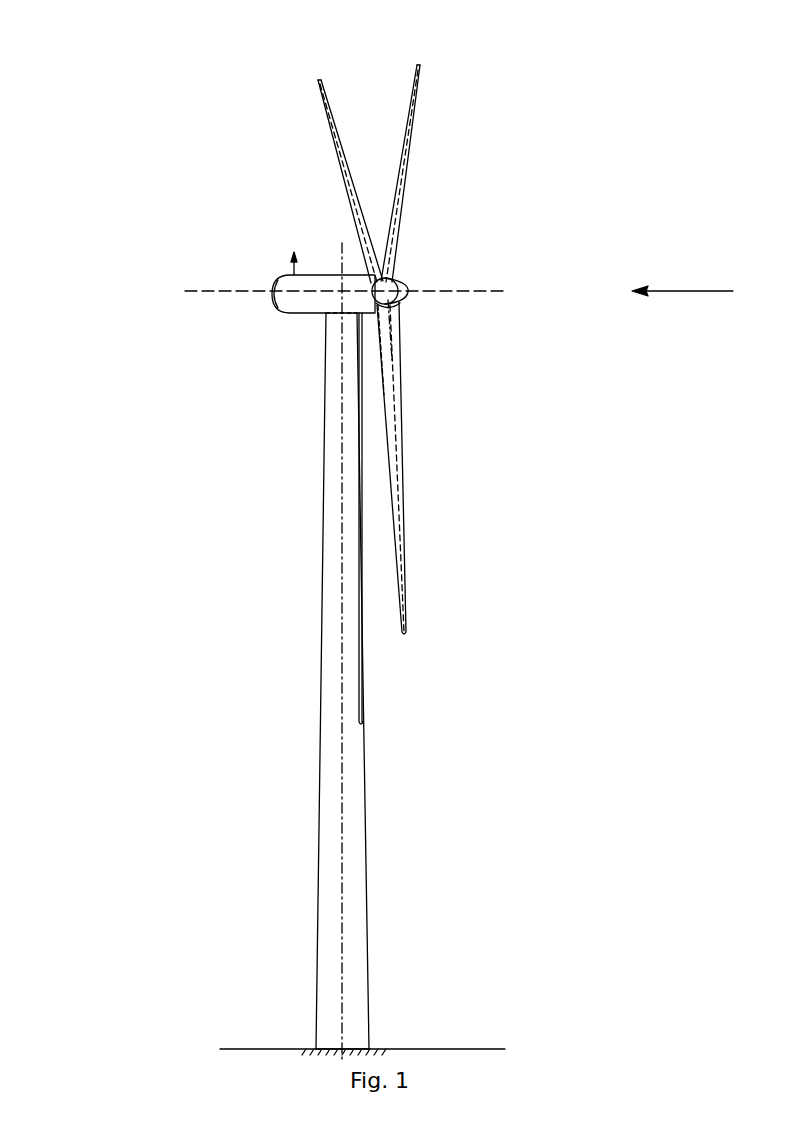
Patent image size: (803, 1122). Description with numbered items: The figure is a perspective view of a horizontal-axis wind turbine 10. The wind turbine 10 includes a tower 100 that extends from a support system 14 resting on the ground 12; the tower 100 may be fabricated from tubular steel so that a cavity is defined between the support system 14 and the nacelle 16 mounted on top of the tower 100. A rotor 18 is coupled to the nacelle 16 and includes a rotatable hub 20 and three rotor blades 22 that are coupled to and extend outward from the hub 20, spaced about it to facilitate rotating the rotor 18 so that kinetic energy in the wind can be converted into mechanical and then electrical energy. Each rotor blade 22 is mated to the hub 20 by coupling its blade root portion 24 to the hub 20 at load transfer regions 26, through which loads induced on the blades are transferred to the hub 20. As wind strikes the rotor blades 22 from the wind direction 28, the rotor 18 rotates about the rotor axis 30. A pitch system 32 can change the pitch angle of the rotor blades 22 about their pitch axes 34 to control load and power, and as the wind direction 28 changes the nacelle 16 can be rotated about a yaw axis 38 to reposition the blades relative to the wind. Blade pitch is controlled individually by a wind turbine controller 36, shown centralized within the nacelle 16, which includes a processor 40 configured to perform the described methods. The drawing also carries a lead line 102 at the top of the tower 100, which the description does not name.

The wind turbine 10 is at (110, 86).
The ground 12 is at (243, 1048).
The support system 14 is at (308, 1047).
The nacelle 16 is at (302, 311).
The rotor 18 is at (420, 197).
The rotatable hub 20 is at (403, 286).
The rotor blade 22 is at (341, 150).
The blade root portion 24 is at (401, 393).
The load transfer regions 26 is at (396, 316).
The wind direction 28 is at (702, 291).
The rotor axis 30 is at (475, 295).
The pitch system 32 is at (400, 348).
The pitch axes 34 is at (318, 86).
The wind turbine controller 36 is at (345, 336).
The yaw axis 38 is at (362, 723).
The processor 40 is at (355, 262).
The tower 100 is at (324, 652).
The tower top 102 is at (326, 313).